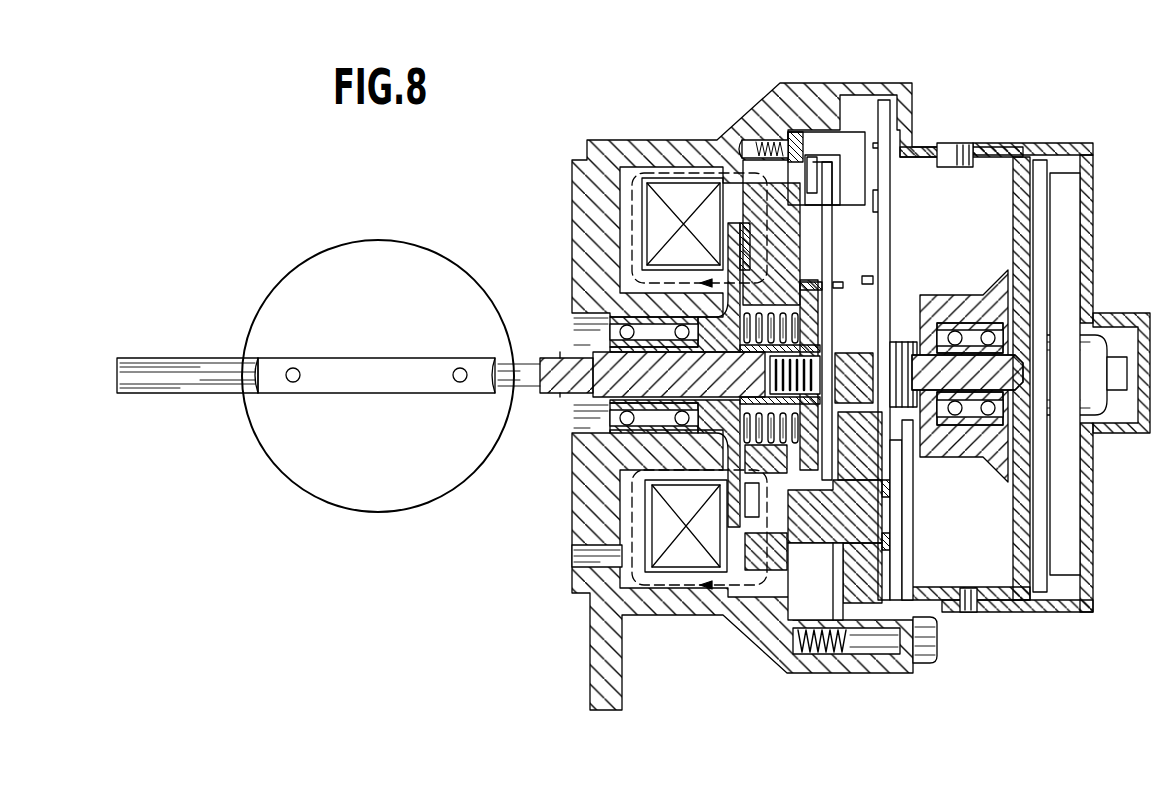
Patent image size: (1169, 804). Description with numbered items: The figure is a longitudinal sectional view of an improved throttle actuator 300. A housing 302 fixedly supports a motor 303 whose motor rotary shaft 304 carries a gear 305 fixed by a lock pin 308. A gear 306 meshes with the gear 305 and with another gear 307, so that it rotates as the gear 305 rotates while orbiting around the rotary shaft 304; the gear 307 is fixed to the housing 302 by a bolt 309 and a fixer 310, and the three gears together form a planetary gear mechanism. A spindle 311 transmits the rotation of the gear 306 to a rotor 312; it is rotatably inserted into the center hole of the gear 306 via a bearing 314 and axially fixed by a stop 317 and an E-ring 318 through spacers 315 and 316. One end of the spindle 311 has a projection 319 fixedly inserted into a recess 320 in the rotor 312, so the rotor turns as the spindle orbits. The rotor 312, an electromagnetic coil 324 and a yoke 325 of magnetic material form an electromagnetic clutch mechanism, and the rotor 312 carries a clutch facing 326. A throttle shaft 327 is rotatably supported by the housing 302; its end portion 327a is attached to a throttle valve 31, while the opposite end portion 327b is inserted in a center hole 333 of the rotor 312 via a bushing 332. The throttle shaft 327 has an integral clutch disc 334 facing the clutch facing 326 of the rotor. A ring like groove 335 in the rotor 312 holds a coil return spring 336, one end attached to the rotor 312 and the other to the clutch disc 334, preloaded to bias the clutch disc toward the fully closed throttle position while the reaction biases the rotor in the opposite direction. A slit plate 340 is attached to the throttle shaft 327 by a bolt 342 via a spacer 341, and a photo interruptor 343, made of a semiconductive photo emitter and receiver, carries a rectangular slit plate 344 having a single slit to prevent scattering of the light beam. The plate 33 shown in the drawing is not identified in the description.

The throttle valve 31 is at (386, 451).
The armature plate 33 is at (841, 321).
The throttle actuator 300 is at (973, 133).
The housing 302 is at (1093, 482).
The motor 303 is at (1083, 338).
The motor rotary shaft 304 is at (922, 375).
The gear 305 is at (840, 350).
The gear 306 is at (873, 580).
The gear 307 is at (858, 627).
The lock pin 308 is at (920, 455).
The bolt 309 is at (937, 643).
The fixer 310 is at (885, 668).
The spindle 311 is at (773, 523).
The rotor 312 is at (757, 187).
The bearing 314 is at (883, 556).
The spacer 315 is at (840, 550).
The spacer 316 is at (897, 552).
The stop 317 is at (806, 540).
The E-ring 318 is at (893, 538).
The projection 319 is at (745, 528).
The recess 320 is at (765, 505).
The electromagnetic coil 324 is at (680, 193).
The yoke 325 is at (627, 173).
The clutch facing 326 is at (742, 542).
The throttle shaft 327 is at (562, 358).
The end portion 327a is at (278, 383).
The end portion 327b is at (590, 398).
The bushing 332 is at (742, 470).
The center hole 333 is at (868, 280).
The clutch disc 334 is at (733, 227).
The ring like groove 335 is at (800, 285).
The coil return spring 336 is at (835, 282).
The slit plate 340 is at (830, 177).
The spacer 341 is at (883, 343).
The bolt 342 is at (884, 440).
The photo interruptor 343 is at (827, 142).
The rectangular slit plate 344 is at (810, 167).